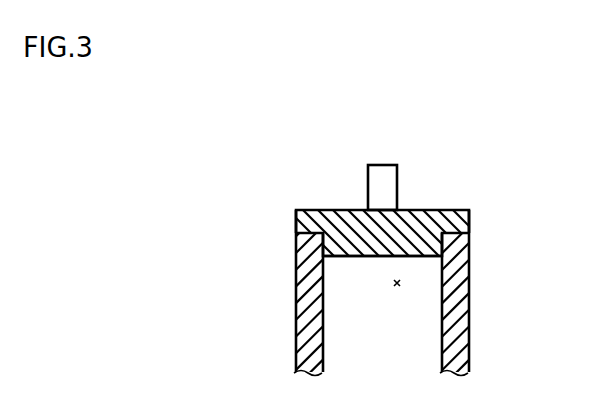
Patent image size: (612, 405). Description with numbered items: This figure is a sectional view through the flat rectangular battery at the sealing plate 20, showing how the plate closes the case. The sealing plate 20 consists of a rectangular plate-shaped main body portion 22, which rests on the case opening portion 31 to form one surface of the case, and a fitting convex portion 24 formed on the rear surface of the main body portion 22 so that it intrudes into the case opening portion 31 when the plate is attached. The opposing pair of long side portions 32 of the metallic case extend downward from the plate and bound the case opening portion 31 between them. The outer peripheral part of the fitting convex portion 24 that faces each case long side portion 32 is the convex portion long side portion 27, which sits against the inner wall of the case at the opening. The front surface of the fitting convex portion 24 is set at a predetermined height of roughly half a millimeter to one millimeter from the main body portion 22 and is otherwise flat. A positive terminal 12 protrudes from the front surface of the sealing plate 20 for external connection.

The positive terminal 12 is at (381, 165).
The sealing plate 20 is at (390, 193).
The main body portion 22 is at (432, 210).
The fitting convex portion 24 is at (382, 304).
The convex portion long side portion 27 is at (333, 269).
The case opening portion 31 is at (398, 283).
The long side portion 32 is at (296, 312).